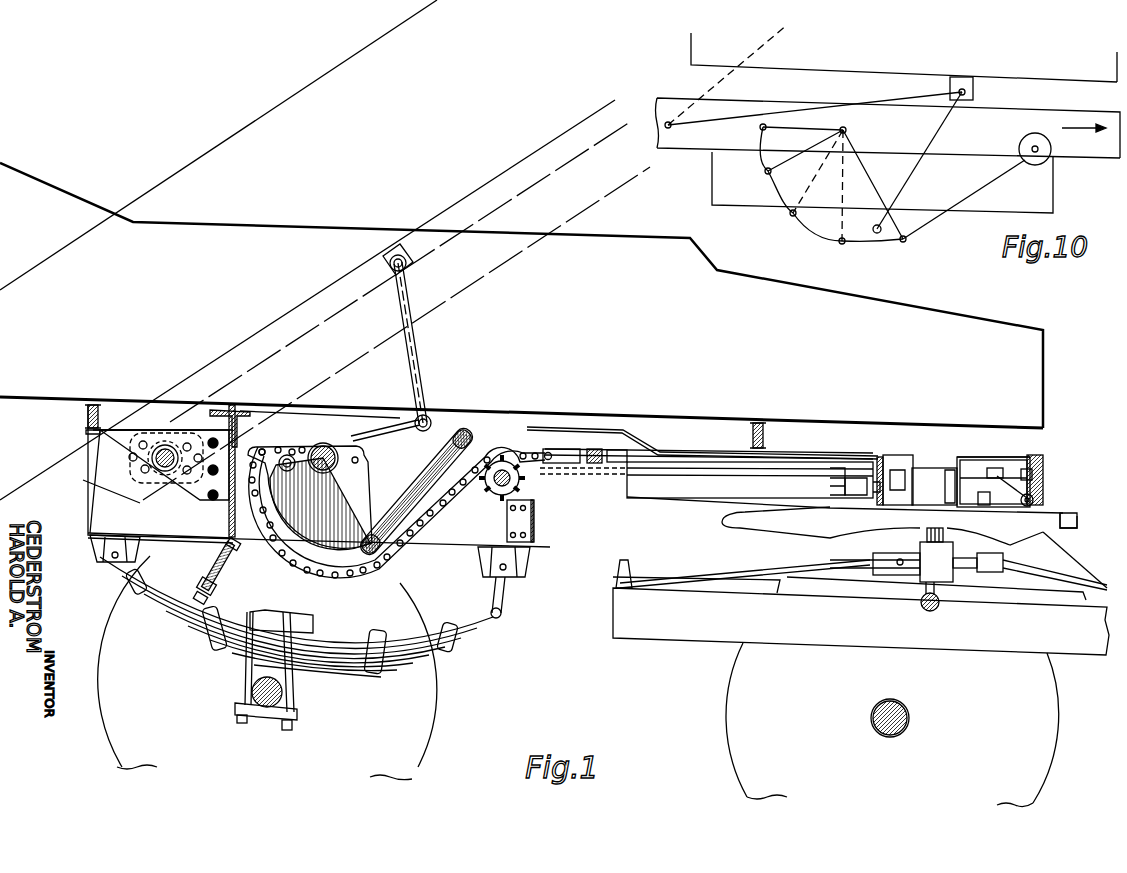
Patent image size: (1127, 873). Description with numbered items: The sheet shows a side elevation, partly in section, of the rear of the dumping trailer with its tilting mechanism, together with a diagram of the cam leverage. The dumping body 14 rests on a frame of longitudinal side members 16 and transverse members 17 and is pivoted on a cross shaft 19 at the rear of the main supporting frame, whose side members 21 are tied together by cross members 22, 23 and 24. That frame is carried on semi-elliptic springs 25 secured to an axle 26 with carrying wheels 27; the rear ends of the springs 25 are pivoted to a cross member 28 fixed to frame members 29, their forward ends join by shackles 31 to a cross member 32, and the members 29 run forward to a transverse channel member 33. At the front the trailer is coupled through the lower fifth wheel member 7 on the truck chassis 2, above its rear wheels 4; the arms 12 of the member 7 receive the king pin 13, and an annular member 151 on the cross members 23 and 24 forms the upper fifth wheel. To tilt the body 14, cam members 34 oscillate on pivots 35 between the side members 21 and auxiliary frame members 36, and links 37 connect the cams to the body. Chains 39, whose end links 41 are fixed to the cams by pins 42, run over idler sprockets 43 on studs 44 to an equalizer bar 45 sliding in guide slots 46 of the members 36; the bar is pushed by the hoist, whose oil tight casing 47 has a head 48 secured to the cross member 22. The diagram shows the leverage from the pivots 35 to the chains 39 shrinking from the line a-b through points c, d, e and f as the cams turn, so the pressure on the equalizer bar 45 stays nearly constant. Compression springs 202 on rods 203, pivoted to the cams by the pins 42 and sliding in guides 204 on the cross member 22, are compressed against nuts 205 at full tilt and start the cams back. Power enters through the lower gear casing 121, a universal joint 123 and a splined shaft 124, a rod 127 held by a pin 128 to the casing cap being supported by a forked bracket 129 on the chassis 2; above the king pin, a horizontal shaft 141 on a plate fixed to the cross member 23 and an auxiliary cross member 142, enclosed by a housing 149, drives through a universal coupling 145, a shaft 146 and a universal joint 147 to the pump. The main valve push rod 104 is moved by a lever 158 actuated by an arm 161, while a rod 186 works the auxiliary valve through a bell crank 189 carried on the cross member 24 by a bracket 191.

In FIG. 1, the chassis 2 is at (708, 634).
In FIG. 1, the rear wheels 4 is at (733, 733).
In FIG. 1, the lower fifth wheel member 7 is at (1046, 536).
In FIG. 1, the rearwardly and downwardly extending arms 12 is at (728, 519).
In FIG. 1, the king pin 13 is at (925, 531).
In FIG. 10, the dumping body 14 is at (708, 46).
In FIG. 1, the dumping body 14 is at (245, 125).
In FIG. 1, the longitudinally extending side members 16 is at (92, 433).
In FIG. 1, the transverse members 17 is at (88, 413).
In FIG. 10, the cross shaft 19 is at (668, 130).
In FIG. 1, the cross shaft 19 is at (162, 448).
In FIG. 1, the side members 21 is at (125, 467).
In FIG. 1, the cross member 22 is at (222, 513).
In FIG. 1, the cross member 23 is at (880, 462).
In FIG. 1, the cross member 24 is at (1045, 472).
In FIG. 1, the semi-elliptic springs 25 is at (182, 622).
In FIG. 1, the axle 26 is at (265, 710).
In FIG. 1, the carrying wheels 27 is at (415, 752).
In FIG. 1, the cross member 28 is at (143, 546).
In FIG. 1, the frame members 29 is at (98, 516).
In FIG. 1, the shackles 31 is at (515, 604).
In FIG. 1, the cross member 32 is at (535, 553).
In FIG. 1, the transverse channel member 33 is at (537, 526).
In FIG. 10, the cam members 34 is at (880, 192).
In FIG. 1, the cam members 34 is at (362, 497).
In FIG. 10, the pivots 35 is at (848, 130).
In FIG. 1, the pivots 35 is at (327, 446).
In FIG. 10, the auxiliary frame members 36 is at (1100, 165).
In FIG. 1, the auxiliary frame members 36 is at (641, 501).
In FIG. 10, the links 37 is at (938, 141).
In FIG. 1, the links 37 is at (423, 338).
In FIG. 10, the chains 39 is at (968, 188).
In FIG. 1, the chains 39 is at (430, 524).
In FIG. 1, the end links 41 is at (280, 455).
In FIG. 1, the pins 42 is at (292, 449).
In FIG. 10, the idler sprockets 43 is at (1040, 149).
In FIG. 1, the idler sprockets 43 is at (498, 493).
In FIG. 10, the studs 44 is at (1045, 160).
In FIG. 1, the studs 44 is at (518, 452).
In FIG. 1, the equalizer bar 45 is at (600, 453).
In FIG. 1, the guide slots 46 is at (635, 470).
In FIG. 1, the oil tight casing 47 is at (357, 422).
In FIG. 1, the head 48 is at (250, 408).
In FIG. 1, the operating rod 104 is at (570, 432).
In FIG. 1, the lower gear casing 121 is at (945, 578).
In FIG. 1, the universal joint 123 is at (997, 573).
In FIG. 1, the splined shaft 124 is at (1053, 576).
In FIG. 1, the rod 127 is at (663, 572).
In FIG. 1, the pin 128 is at (905, 573).
In FIG. 1, the forked bracket 129 is at (626, 567).
In FIG. 1, the horizontal shaft 141 is at (940, 470).
In FIG. 1, the auxiliary cross member 142 is at (965, 463).
In FIG. 1, the universal coupling 145 is at (857, 482).
In FIG. 1, the shaft 146 is at (700, 478).
In FIG. 1, the universal joint 147 is at (552, 478).
In FIG. 1, the housing 149 is at (967, 457).
In FIG. 1, the annular member 151 is at (1064, 515).
In FIG. 1, the lever 158 is at (903, 460).
In FIG. 1, the arm 161 is at (912, 485).
In FIG. 1, the rod 186 is at (978, 472).
In FIG. 1, the bell crank 189 is at (1000, 468).
In FIG. 1, the bracket 191 is at (1035, 498).
In FIG. 1, the compression springs 202 is at (237, 572).
In FIG. 1, the rods 203 is at (200, 588).
In FIG. 1, the guides 204 is at (242, 560).
In FIG. 1, the nuts 205 is at (222, 596).